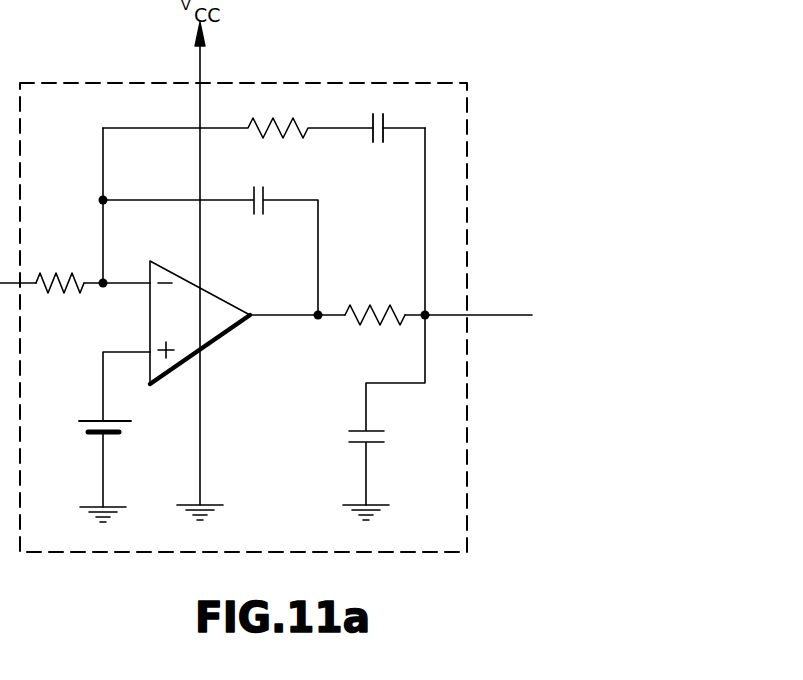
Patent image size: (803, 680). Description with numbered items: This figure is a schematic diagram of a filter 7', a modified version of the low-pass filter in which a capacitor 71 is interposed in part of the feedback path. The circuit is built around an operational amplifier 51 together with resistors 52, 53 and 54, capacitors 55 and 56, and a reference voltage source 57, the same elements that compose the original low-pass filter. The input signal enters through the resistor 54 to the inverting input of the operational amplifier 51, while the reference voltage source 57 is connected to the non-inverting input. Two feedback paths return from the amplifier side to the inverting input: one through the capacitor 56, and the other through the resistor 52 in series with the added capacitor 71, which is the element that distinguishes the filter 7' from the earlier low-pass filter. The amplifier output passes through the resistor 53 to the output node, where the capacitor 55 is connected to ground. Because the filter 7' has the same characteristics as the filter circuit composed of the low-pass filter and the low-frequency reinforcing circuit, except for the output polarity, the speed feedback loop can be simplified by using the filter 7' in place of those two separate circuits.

The filter 7' is at (271, 317).
The operational amplifier 51 is at (216, 327).
The resistor 52 is at (283, 138).
The resistor 53 is at (366, 323).
The resistor 54 is at (68, 270).
The capacitor 55 is at (360, 443).
The capacitor 56 is at (258, 208).
The reference voltage source 57 is at (110, 434).
The capacitor 71 is at (372, 140).